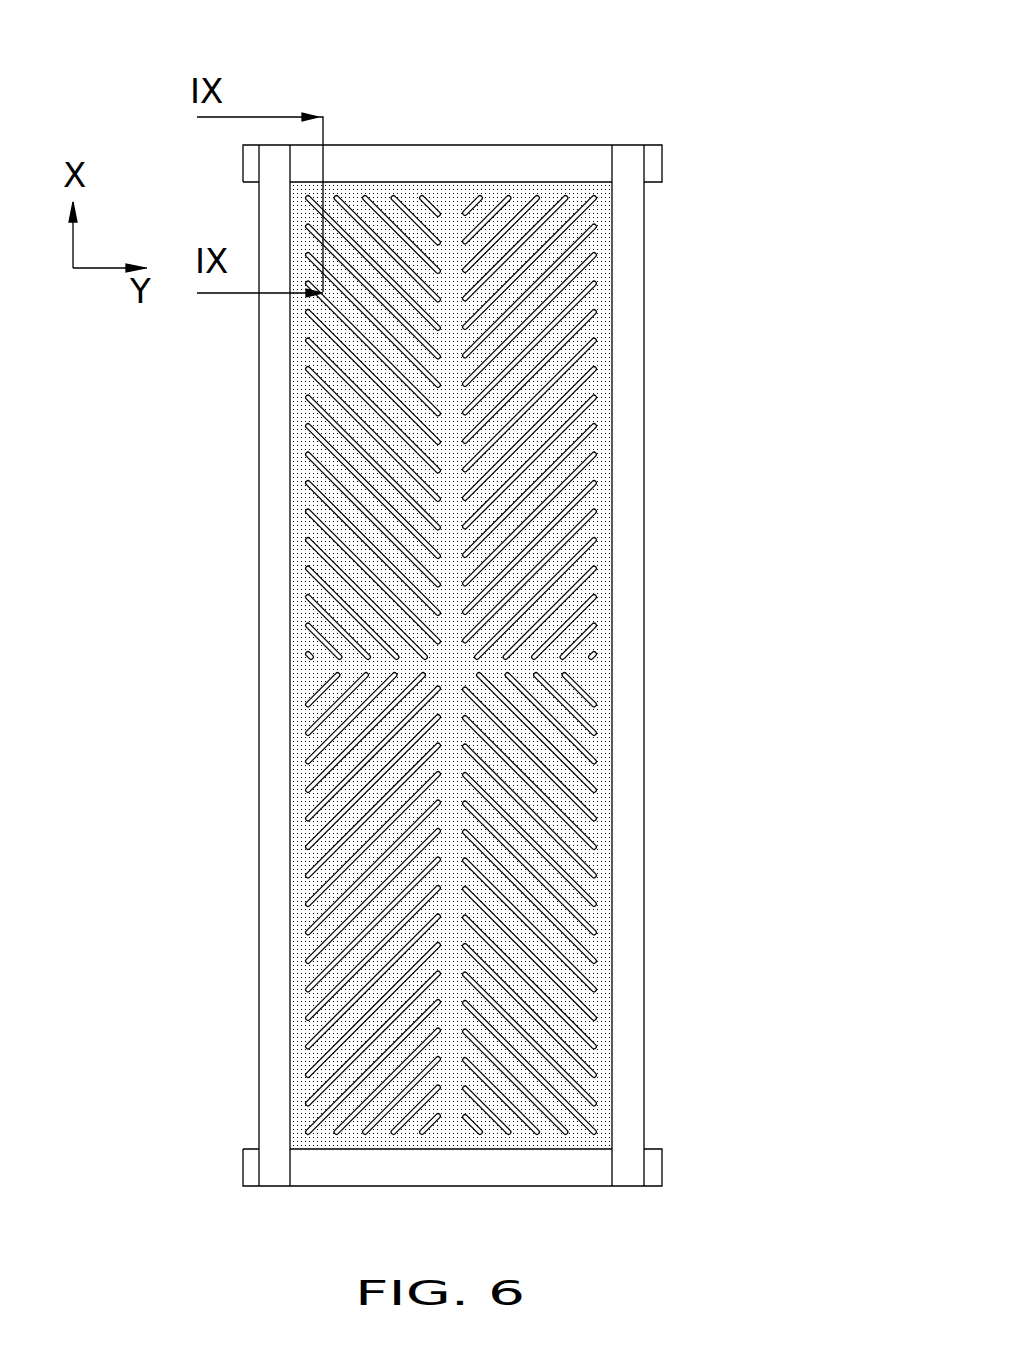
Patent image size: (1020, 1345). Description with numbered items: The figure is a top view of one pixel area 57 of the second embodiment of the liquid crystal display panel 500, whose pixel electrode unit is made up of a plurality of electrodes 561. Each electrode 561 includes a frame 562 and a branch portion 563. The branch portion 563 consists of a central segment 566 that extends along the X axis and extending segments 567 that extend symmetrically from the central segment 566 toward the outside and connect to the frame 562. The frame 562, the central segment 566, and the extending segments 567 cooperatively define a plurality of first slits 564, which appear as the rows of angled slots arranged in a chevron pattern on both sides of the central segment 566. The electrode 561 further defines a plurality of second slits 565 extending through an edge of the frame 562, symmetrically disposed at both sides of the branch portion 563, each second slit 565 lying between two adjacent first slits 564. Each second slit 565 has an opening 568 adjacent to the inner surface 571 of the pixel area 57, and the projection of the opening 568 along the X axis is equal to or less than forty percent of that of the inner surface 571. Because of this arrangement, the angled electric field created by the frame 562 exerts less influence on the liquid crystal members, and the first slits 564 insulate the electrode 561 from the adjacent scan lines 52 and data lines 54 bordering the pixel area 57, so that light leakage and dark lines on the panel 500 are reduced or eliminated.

The liquid crystal display panel 500 is at (456, 30).
The scan line 52 is at (402, 172).
The data line 54 is at (633, 612).
The pixel area 57 is at (496, 601).
The electrode 561 is at (496, 665).
The frame 562 is at (600, 373).
The branch portion 563 is at (572, 365).
The first slit 564 is at (595, 252).
The second slit 565 is at (307, 482).
The central segment 566 is at (455, 217).
The extending segment 567 is at (590, 233).
The opening 568 is at (610, 852).
The inner surface 571 is at (613, 310).